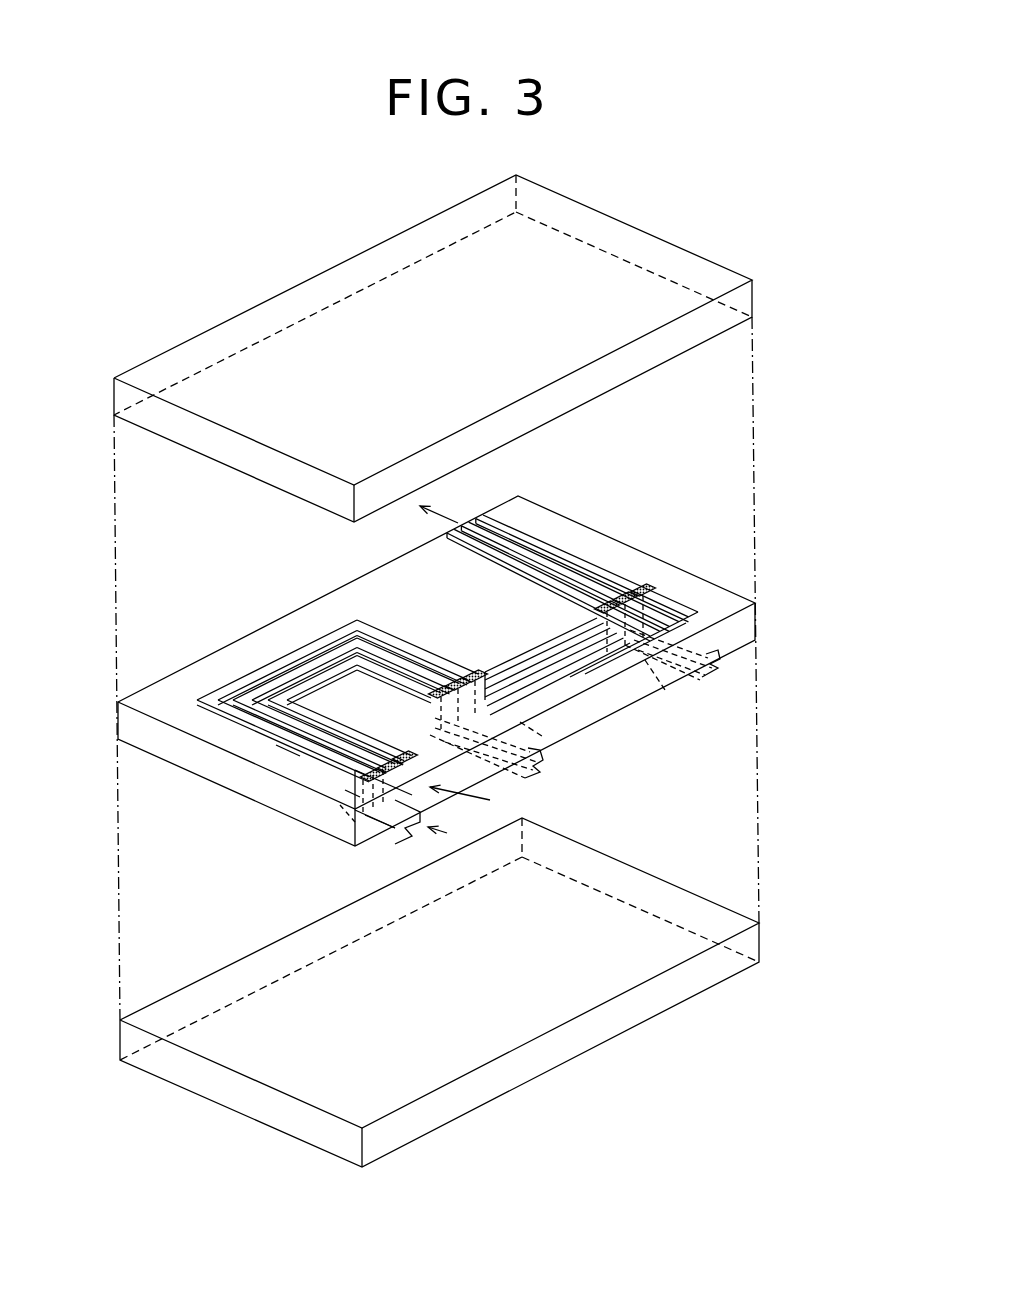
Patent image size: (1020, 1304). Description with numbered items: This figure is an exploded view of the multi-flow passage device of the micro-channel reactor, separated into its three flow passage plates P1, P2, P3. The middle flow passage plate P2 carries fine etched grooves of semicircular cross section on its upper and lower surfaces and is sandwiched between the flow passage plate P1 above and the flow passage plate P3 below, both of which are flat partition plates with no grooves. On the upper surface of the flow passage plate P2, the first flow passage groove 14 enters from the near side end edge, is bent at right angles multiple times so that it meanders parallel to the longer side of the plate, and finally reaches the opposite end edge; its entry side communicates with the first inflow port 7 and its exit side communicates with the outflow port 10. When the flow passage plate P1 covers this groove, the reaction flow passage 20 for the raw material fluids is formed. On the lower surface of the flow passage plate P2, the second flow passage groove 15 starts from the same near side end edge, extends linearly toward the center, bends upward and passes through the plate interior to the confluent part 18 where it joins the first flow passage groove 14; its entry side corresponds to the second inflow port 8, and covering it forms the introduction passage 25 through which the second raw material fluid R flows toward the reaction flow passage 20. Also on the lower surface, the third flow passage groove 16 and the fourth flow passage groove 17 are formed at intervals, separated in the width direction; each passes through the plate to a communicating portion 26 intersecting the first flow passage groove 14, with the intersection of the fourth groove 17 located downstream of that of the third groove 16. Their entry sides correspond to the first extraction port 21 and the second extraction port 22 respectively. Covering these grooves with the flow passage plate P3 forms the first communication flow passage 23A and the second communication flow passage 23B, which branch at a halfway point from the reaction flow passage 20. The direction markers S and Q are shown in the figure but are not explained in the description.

The flow passage plate P1 is at (418, 597).
The flow passage plate P2 is at (416, 671).
The flow passage plate P3 is at (418, 992).
The outflow port 10 is at (572, 571).
The first flow passage groove 14 is at (275, 664).
The communicating portion 26 is at (641, 589).
The first communication flow passage 23A is at (568, 740).
The second communication flow passage 23B is at (708, 643).
The second extraction port 22 is at (698, 661).
The first extraction port 21 is at (528, 766).
The third flow passage groove 16 is at (535, 728).
The fourth flow passage groove 17 is at (657, 683).
The first inflow port 7 is at (466, 809).
The second inflow port 8 is at (413, 820).
The second flow passage groove 15 is at (375, 838).
The introduction passage 25 is at (352, 817).
The confluent part 18 is at (350, 793).
The reaction flow passage 20 is at (276, 745).
The direction S is at (439, 509).
The direction Q is at (523, 825).
The second raw material fluid R is at (530, 865).